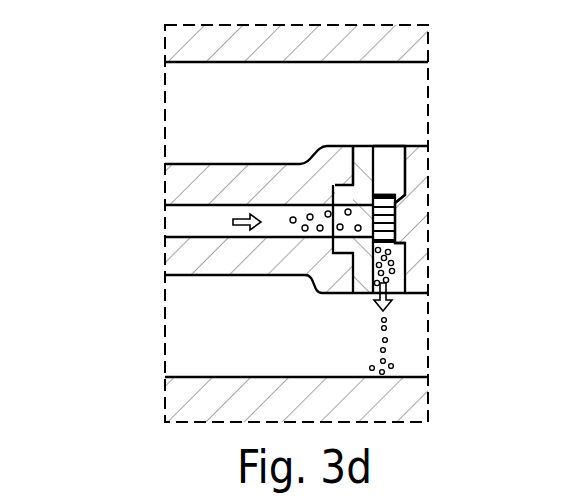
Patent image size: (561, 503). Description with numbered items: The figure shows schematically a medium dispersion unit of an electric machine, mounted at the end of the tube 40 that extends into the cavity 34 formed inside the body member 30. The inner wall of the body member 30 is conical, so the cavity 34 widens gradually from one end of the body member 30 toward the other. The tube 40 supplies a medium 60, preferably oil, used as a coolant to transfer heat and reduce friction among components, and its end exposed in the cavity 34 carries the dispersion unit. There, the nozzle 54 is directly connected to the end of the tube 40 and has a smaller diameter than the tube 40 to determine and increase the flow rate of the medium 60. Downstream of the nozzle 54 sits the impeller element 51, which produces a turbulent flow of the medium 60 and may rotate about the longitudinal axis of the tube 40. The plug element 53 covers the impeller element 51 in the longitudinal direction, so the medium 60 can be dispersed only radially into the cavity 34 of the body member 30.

The body member 30 is at (192, 42).
The cavity 34 is at (192, 118).
The tube 40 is at (192, 256).
The impeller element 51 is at (406, 163).
The plug element 53 is at (406, 218).
The nozzle 54 is at (365, 152).
The medium 60 is at (303, 223).